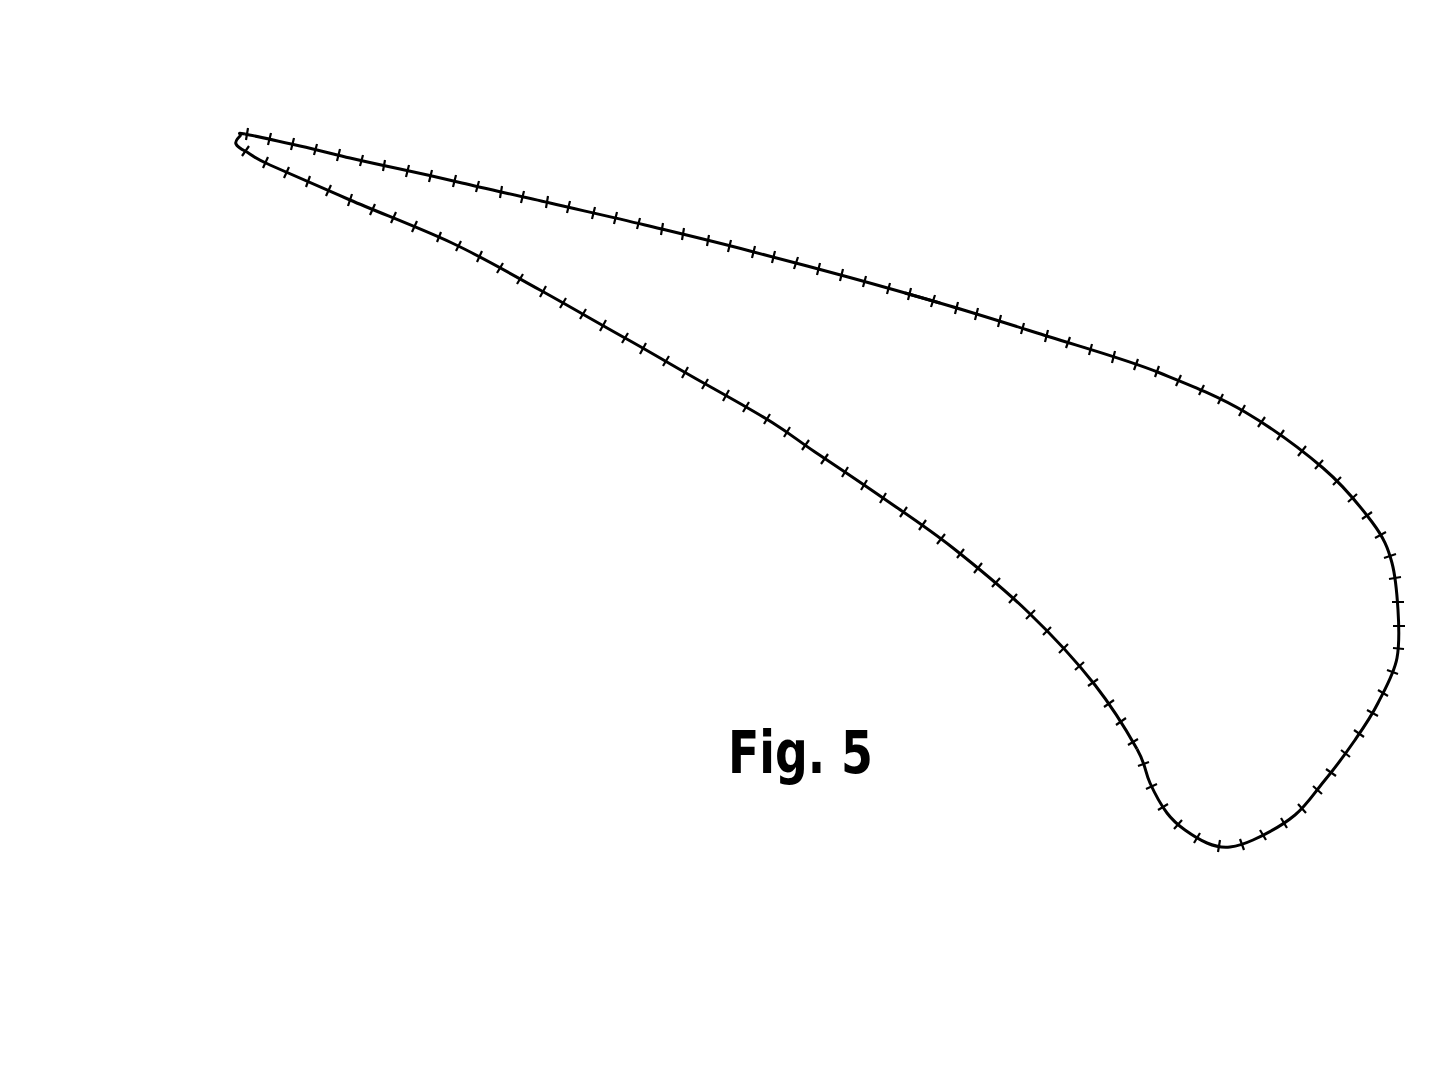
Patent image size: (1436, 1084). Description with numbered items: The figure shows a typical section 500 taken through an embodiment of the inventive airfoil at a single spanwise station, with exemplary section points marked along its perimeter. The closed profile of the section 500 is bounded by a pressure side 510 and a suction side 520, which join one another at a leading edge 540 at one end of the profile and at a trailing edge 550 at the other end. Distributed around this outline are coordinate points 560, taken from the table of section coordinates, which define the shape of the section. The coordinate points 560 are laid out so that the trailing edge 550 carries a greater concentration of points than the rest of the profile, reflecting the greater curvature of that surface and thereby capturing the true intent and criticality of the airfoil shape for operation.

The typical section 500 is at (792, 501).
The pressure side 510 is at (882, 500).
The suction side 520 is at (1248, 411).
The leading edge 540 is at (1233, 848).
The trailing edge 550 is at (238, 138).
The coordinate points 560 is at (915, 292).